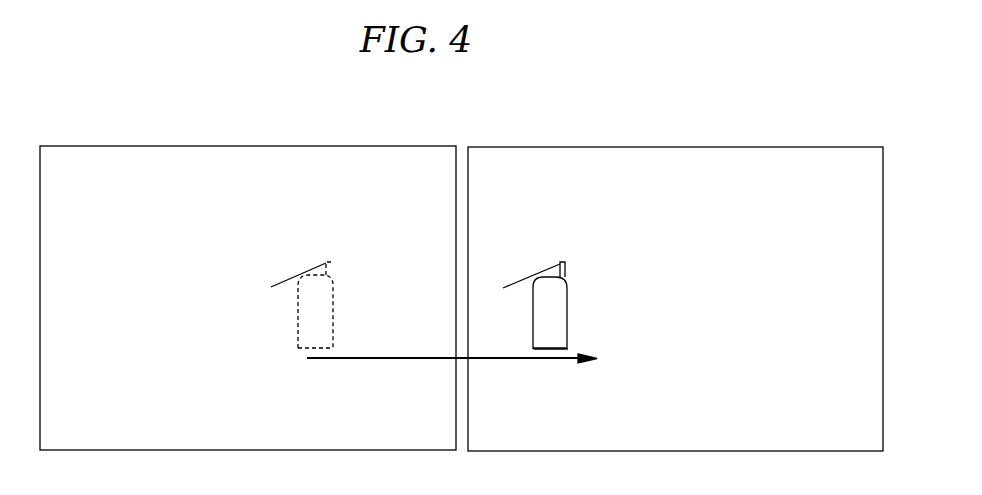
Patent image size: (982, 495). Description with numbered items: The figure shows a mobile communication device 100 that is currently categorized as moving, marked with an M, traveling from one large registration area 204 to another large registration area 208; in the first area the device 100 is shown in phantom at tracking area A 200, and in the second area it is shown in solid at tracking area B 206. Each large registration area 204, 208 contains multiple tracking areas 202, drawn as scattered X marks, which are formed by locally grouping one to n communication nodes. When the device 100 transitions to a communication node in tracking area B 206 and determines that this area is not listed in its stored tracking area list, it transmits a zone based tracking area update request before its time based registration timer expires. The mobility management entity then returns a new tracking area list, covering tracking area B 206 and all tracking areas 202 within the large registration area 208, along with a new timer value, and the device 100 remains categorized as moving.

The mobile communication device 100 is at (333, 303).
The tracking area A 200 is at (259, 283).
The tracking areas 202 is at (296, 170).
The large registration area 204 is at (177, 146).
The tracking area B 206 is at (497, 282).
The large registration area 208 is at (675, 147).